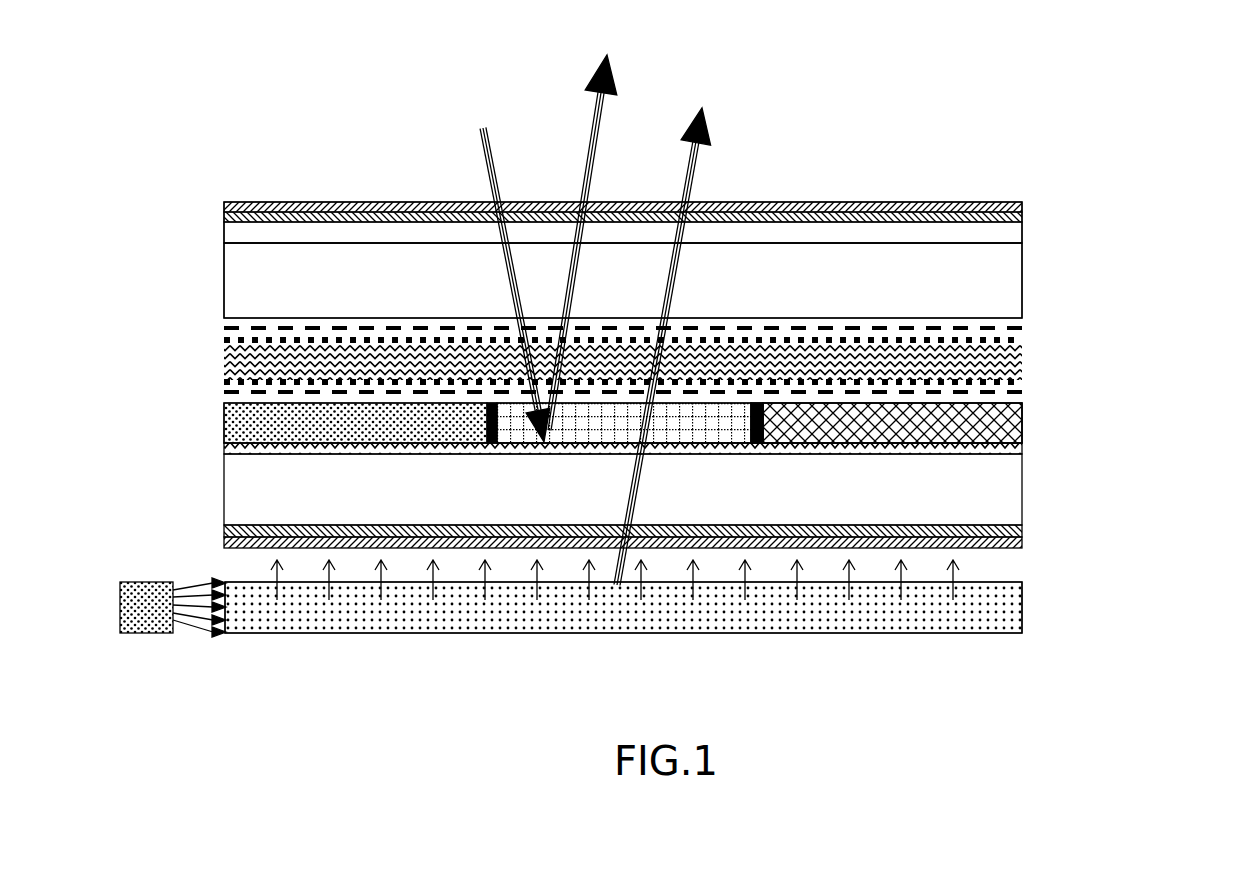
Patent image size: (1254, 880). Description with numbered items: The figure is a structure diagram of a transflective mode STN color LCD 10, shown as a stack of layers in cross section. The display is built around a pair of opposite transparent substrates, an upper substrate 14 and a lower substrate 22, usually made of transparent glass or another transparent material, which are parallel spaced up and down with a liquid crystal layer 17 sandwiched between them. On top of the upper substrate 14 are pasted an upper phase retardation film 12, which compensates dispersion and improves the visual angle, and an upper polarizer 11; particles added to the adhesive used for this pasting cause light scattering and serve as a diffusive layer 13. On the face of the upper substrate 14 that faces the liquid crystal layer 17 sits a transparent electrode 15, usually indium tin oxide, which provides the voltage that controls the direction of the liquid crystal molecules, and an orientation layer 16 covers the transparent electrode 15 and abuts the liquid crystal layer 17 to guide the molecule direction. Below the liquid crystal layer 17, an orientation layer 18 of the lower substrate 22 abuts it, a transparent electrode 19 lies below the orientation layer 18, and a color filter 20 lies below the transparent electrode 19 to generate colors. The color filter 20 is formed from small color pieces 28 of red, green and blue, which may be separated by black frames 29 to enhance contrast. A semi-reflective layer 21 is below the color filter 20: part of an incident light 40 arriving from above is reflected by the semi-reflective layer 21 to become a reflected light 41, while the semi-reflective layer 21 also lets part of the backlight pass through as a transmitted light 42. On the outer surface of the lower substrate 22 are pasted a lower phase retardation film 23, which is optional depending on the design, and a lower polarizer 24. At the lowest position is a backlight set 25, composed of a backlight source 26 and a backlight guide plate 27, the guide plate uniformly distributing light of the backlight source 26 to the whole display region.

The transflective mode STN color LCD 10 is at (223, 196).
The upper polarizer 11 is at (1020, 200).
The upper phase retardation film 12 is at (1020, 213).
The diffusive layer 13 is at (1018, 232).
The upper substrate 14 is at (1018, 273).
The transparent electrode 15 is at (1017, 327).
The orientation layer 16 is at (1023, 337).
The liquid crystal layer 17 is at (1020, 357).
The orientation layer 18 is at (1020, 380).
The transparent electrode 19 is at (1017, 392).
The color filter 20 is at (1018, 425).
The semi-reflective layer 21 is at (1018, 452).
The lower substrate 22 is at (1020, 485).
The lower phase retardation film 23 is at (1020, 532).
The lower polarizer 24 is at (1020, 550).
The backlight set 25 is at (1025, 602).
The backlight source 26 is at (153, 625).
The backlight guide plate 27 is at (797, 622).
The color pieces 28 is at (868, 398).
The black frames 29 is at (762, 398).
The incident light 40 is at (478, 167).
The reflected light 41 is at (607, 125).
The transmitted light 42 is at (708, 175).